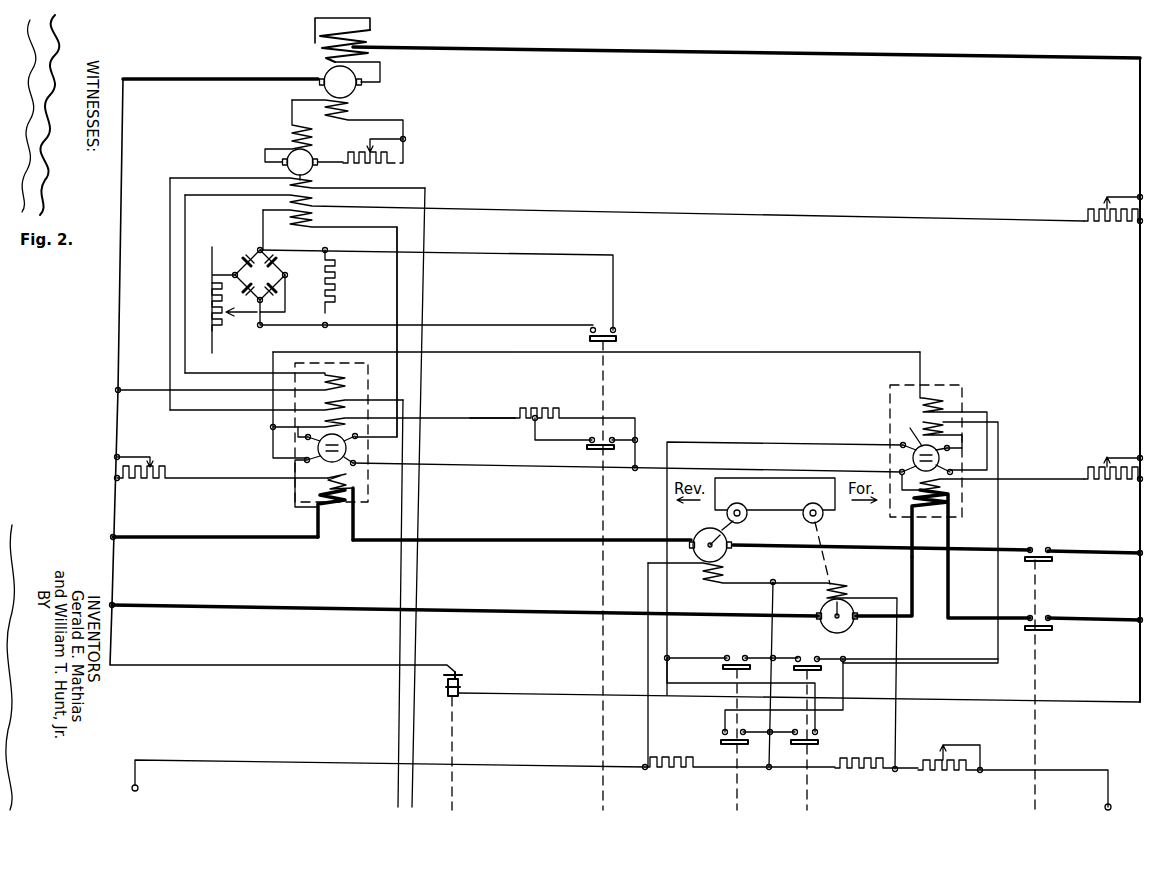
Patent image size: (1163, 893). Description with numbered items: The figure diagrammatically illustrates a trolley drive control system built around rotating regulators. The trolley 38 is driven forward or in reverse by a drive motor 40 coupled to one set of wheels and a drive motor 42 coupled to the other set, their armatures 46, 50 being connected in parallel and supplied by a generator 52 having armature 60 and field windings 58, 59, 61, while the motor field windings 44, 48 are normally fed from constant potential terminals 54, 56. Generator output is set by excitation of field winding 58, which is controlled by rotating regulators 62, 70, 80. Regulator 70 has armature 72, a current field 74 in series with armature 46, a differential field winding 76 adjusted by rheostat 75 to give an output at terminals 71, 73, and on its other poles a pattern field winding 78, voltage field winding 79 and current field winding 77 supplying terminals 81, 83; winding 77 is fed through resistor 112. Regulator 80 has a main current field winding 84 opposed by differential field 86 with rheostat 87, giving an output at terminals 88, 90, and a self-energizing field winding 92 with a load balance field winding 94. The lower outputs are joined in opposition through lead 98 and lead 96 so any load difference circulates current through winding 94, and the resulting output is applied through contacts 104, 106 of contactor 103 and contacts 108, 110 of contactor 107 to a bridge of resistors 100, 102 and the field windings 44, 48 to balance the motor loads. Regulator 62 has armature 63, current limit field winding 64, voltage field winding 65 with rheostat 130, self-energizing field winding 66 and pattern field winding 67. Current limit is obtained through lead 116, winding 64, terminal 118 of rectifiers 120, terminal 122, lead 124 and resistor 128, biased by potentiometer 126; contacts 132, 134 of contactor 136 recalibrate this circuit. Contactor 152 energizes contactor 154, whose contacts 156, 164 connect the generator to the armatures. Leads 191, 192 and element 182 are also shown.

The trolley 38 is at (790, 502).
The drive motor 40 is at (691, 536).
The drive motor 42 is at (847, 619).
The field winding 44 is at (707, 581).
The armature 46 is at (727, 562).
The field winding 48 is at (848, 588).
The armature 50 is at (820, 628).
The generator 52 is at (412, 89).
The terminal 54 is at (138, 790).
The terminal 56 is at (1111, 808).
The field winding 58 is at (352, 110).
The field winding 59 is at (322, 48).
The armature 60 is at (326, 68).
The field winding 61 is at (372, 32).
The rotating regulator 62 is at (340, 181).
The armature 63 is at (280, 164).
The current limit field winding 64 is at (330, 323).
The voltage field winding 65 is at (634, 205).
The self-energizing field winding 66 is at (301, 131).
The pattern field winding 67 is at (297, 181).
The rotating regulator 70 is at (392, 455).
The terminal 71 is at (356, 466).
The armature 72 is at (346, 486).
The terminal 73 is at (300, 462).
The current field 74 is at (335, 514).
The rheostat 75 is at (168, 468).
The differential field winding 76 is at (310, 471).
The current field winding 77 is at (394, 427).
The pattern field winding 78 is at (286, 407).
The voltage field winding 79 is at (241, 382).
The rotating regulator 80 is at (991, 465).
The terminal 81 is at (362, 437).
The terminal 83 is at (305, 438).
The field winding 84 is at (971, 554).
The differential field 86 is at (993, 486).
The rheostat 87 is at (1092, 484).
The terminal 88 is at (957, 475).
The terminal 90 is at (900, 471).
The self-energizing field winding 92 is at (920, 540).
The load balance field winding 94 is at (953, 411).
The lead 96 is at (513, 468).
The lead 98 is at (540, 355).
The resistor 100 is at (739, 774).
The resistor 102 is at (876, 776).
The contactor 103 is at (732, 791).
The contact 104 is at (732, 651).
The contact 106 is at (744, 732).
The contactor 107 is at (802, 801).
The contact 108 is at (803, 660).
The contact 110 is at (815, 732).
The resistor 112 is at (576, 428).
The lead 116 is at (397, 311).
The terminal 118 is at (264, 250).
The rectifiers 120 is at (278, 270).
The terminal 122 is at (262, 327).
The lead 124 is at (250, 307).
The biasing potentiometer 126 is at (208, 335).
The resistor 128 is at (330, 288).
The rheostat 130 is at (1106, 226).
The contact 132 is at (616, 333).
The contact 134 is at (612, 452).
The contactor 136 is at (598, 648).
The contactor 152 is at (792, 710).
The contactor 154 is at (1038, 744).
The contact 156 is at (1048, 562).
The contact 164 is at (1042, 616).
The brush 182 is at (904, 425).
The conductor 191 is at (414, 790).
The conductor 192 is at (396, 788).